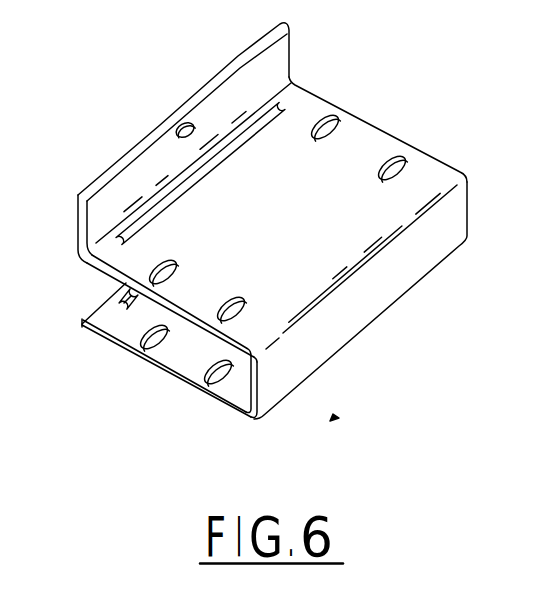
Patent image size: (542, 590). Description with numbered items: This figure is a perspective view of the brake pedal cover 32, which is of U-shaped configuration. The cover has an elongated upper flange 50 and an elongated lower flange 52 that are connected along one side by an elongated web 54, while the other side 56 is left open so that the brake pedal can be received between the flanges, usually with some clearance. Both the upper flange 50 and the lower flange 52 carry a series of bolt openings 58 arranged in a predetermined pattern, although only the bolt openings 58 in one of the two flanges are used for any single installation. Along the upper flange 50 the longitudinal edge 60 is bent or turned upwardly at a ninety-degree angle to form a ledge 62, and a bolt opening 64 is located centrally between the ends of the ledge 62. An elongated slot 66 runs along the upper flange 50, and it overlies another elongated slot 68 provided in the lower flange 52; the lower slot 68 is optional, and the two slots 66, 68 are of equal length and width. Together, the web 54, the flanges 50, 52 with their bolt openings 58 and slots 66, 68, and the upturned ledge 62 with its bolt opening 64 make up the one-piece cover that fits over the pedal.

The brake pedal cover 32 is at (242, 242).
The upper flange 50 is at (353, 137).
The lower flange 52 is at (163, 358).
The web 54 is at (350, 320).
The other side 56 is at (98, 288).
The bolt openings 58 is at (398, 160).
The longitudinal edge 60 is at (78, 208).
The ledge 62 is at (220, 107).
The bolt opening 64 is at (185, 126).
The elongated slot 66 is at (275, 115).
The elongated slot 68 is at (83, 322).